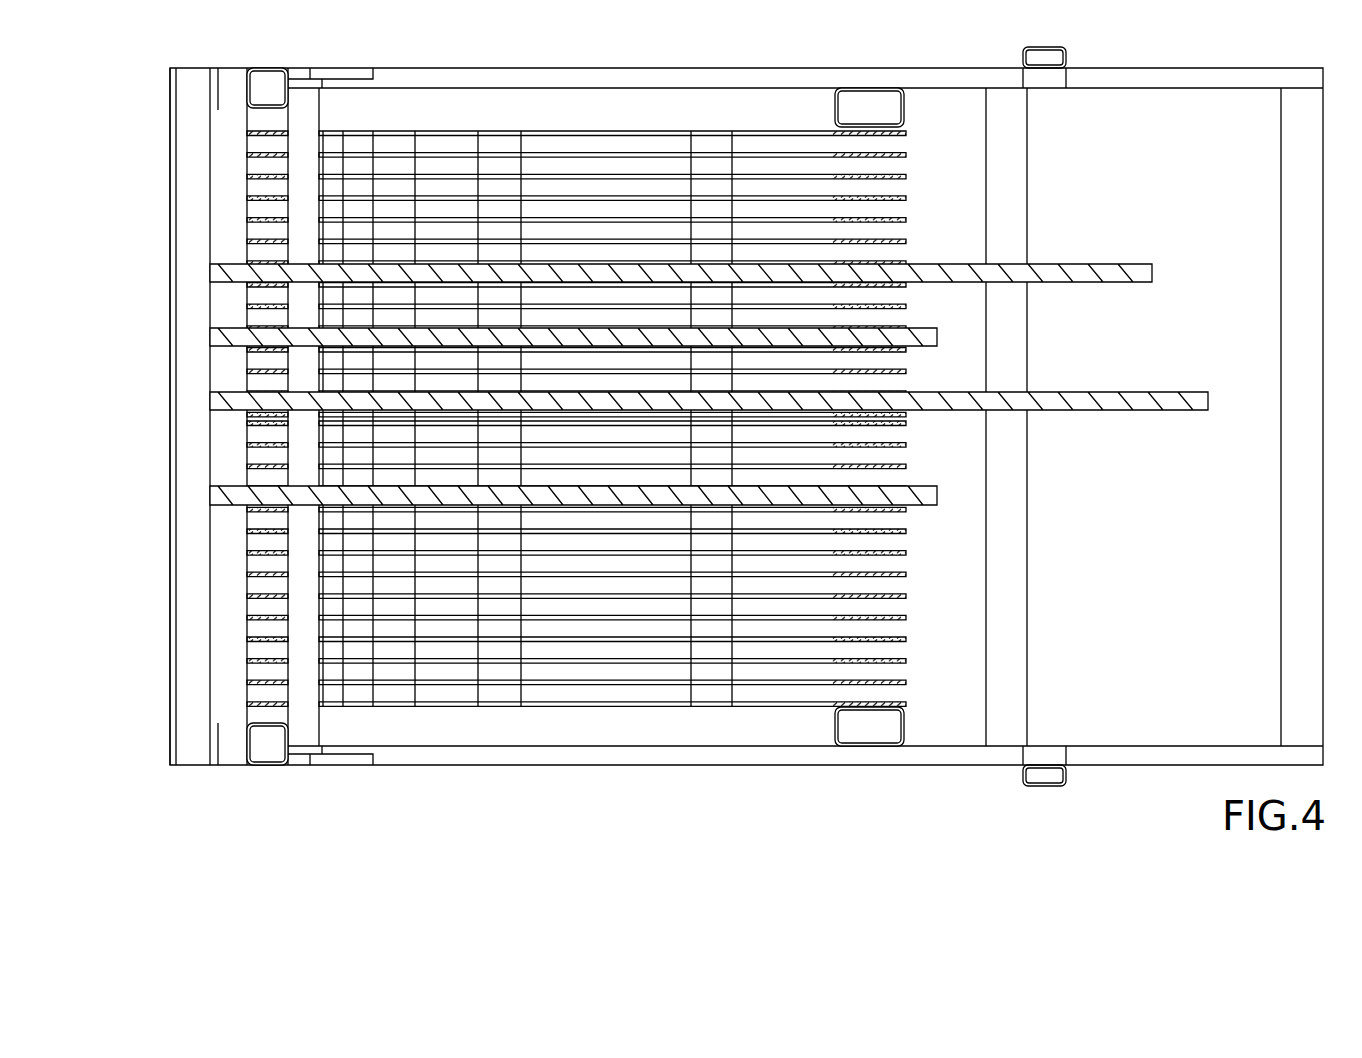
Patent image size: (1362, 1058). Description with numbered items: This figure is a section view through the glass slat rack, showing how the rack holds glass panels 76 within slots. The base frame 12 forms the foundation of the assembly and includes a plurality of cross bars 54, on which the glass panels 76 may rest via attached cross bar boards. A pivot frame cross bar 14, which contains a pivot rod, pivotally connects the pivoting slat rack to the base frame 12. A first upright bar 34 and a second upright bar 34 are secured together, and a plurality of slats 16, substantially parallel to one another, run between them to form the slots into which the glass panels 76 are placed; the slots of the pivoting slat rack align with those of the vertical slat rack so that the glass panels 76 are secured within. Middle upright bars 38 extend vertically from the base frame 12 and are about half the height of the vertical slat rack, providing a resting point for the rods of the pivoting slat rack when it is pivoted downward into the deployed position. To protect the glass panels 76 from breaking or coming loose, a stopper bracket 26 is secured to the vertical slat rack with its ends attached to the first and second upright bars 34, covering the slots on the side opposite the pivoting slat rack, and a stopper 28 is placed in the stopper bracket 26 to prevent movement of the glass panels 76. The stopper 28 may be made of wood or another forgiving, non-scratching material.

The base frame 12 is at (532, 70).
The pivot frame cross bar 14 is at (312, 108).
The slats 16 is at (247, 218).
The stopper bracket 26 is at (172, 98).
The stopper 28 is at (183, 150).
The upright bar 34 is at (268, 68).
The middle upright bar 38 is at (1048, 47).
The cross bars 54 is at (397, 143).
The glass panels 76 is at (1130, 272).